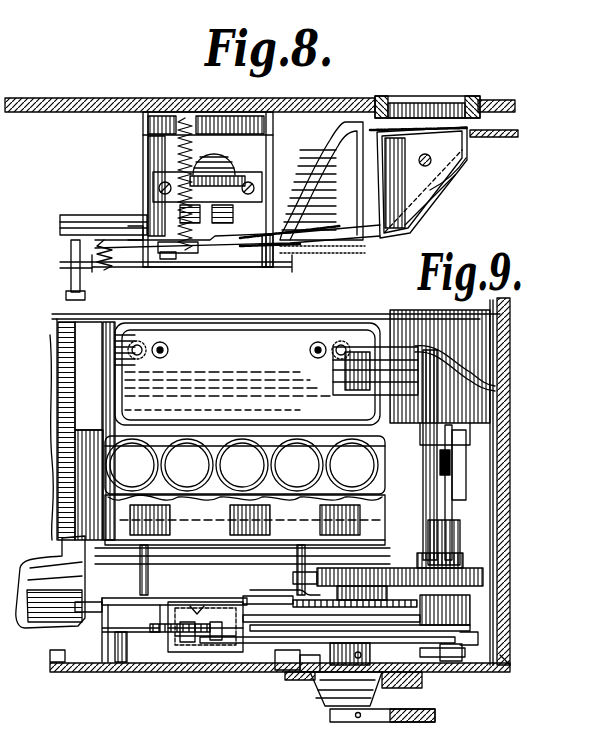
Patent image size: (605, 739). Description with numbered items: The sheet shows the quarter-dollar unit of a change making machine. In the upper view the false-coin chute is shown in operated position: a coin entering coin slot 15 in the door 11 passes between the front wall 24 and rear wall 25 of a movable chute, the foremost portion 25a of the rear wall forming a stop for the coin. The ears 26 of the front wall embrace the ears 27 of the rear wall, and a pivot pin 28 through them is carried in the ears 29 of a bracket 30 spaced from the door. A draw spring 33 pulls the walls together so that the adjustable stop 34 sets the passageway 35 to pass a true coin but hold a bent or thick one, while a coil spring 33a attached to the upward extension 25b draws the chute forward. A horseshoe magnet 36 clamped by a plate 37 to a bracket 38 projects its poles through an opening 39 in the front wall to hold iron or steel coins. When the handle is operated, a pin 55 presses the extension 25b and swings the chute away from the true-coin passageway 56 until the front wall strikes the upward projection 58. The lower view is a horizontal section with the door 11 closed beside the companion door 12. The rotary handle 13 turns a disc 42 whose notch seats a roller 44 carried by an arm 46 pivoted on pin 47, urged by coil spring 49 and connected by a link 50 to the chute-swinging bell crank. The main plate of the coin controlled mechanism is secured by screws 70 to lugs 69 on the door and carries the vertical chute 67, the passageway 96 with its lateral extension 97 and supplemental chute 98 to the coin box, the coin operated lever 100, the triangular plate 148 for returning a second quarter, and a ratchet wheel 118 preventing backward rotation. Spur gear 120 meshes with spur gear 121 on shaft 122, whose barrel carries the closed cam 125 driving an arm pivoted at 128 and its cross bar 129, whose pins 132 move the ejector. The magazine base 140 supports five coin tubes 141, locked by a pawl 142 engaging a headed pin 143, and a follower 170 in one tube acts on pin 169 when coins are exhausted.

In FIG. 8, the door 11 is at (313, 99).
In FIG. 8, the coin slot 15 is at (385, 102).
In FIG. 8, the bracket 30 is at (493, 138).
In FIG. 8, the front wall of chute 24 is at (322, 165).
In FIG. 8, the foremost portion of wall 25a is at (437, 130).
In FIG. 8, the ears of bracket 29 is at (466, 172).
In FIG. 8, the pivot pin 28 is at (420, 163).
In FIG. 8, the ears of wall 27 is at (430, 203).
In FIG. 8, the ears of front wall 26 is at (414, 220).
In FIG. 8, the rear wall of chute 25 is at (372, 235).
In FIG. 8, the opening in wall 39 is at (262, 236).
In FIG. 8, the bracket 38 is at (143, 144).
In FIG. 8, the permanent magnet 36 is at (222, 166).
In FIG. 8, the clamping plate 37 is at (262, 175).
In FIG. 8, the coil spring 33a is at (197, 148).
In FIG. 8, the upward projection 58 is at (100, 230).
In FIG. 8, the draw spring 33 is at (104, 240).
In FIG. 8, the true-coin passageway 56 is at (135, 228).
In FIG. 8, the adjustable stop 34 is at (66, 252).
In FIG. 8, the pin 55 is at (165, 253).
In FIG. 8, the upward extension of wall 25b is at (174, 259).
In FIG. 8, the passageway between walls 35 is at (246, 268).
In FIG. 9, the door 12 is at (415, 311).
In FIG. 9, the cross bar 129 is at (296, 330).
In FIG. 9, the pins 132 is at (169, 350).
In FIG. 9, the pivot of arm 128 is at (338, 385).
In FIG. 9, the closed cam 125 is at (495, 388).
In FIG. 9, the coin tubes 141 is at (178, 470).
In FIG. 9, the magazine base 140 is at (195, 515).
In FIG. 9, the follower 170 is at (290, 530).
In FIG. 9, the ratchet wheel 118 is at (340, 598).
In FIG. 9, the headed pin 143 is at (448, 465).
In FIG. 9, the shaft 122 is at (452, 488).
In FIG. 9, the pawl 142 is at (445, 510).
In FIG. 9, the spur gear 121 is at (484, 578).
In FIG. 9, the spur gear 120 is at (296, 578).
In FIG. 9, the supplemental chute 98 is at (40, 560).
In FIG. 9, the lateral extension 97 is at (88, 612).
In FIG. 9, the screws 70 is at (120, 622).
In FIG. 9, the triangular plate 148 is at (198, 610).
In FIG. 9, the pin 169 is at (250, 590).
In FIG. 9, the coin operated lever 100 is at (290, 620).
In FIG. 9, the vertical chute 67 is at (188, 642).
In FIG. 9, the vertical passageway 96 is at (216, 640).
In FIG. 9, the lugs 69 is at (102, 658).
In FIG. 9, the coil spring 49 is at (505, 661).
In FIG. 9, the arm 46 is at (435, 660).
In FIG. 9, the link 50 is at (412, 680).
In FIG. 9, the rotary handle 13 is at (436, 716).
In FIG. 9, the roller 44 is at (322, 706).
In FIG. 9, the disc 42 is at (298, 672).
In FIG. 9, the pin 47 is at (282, 668).